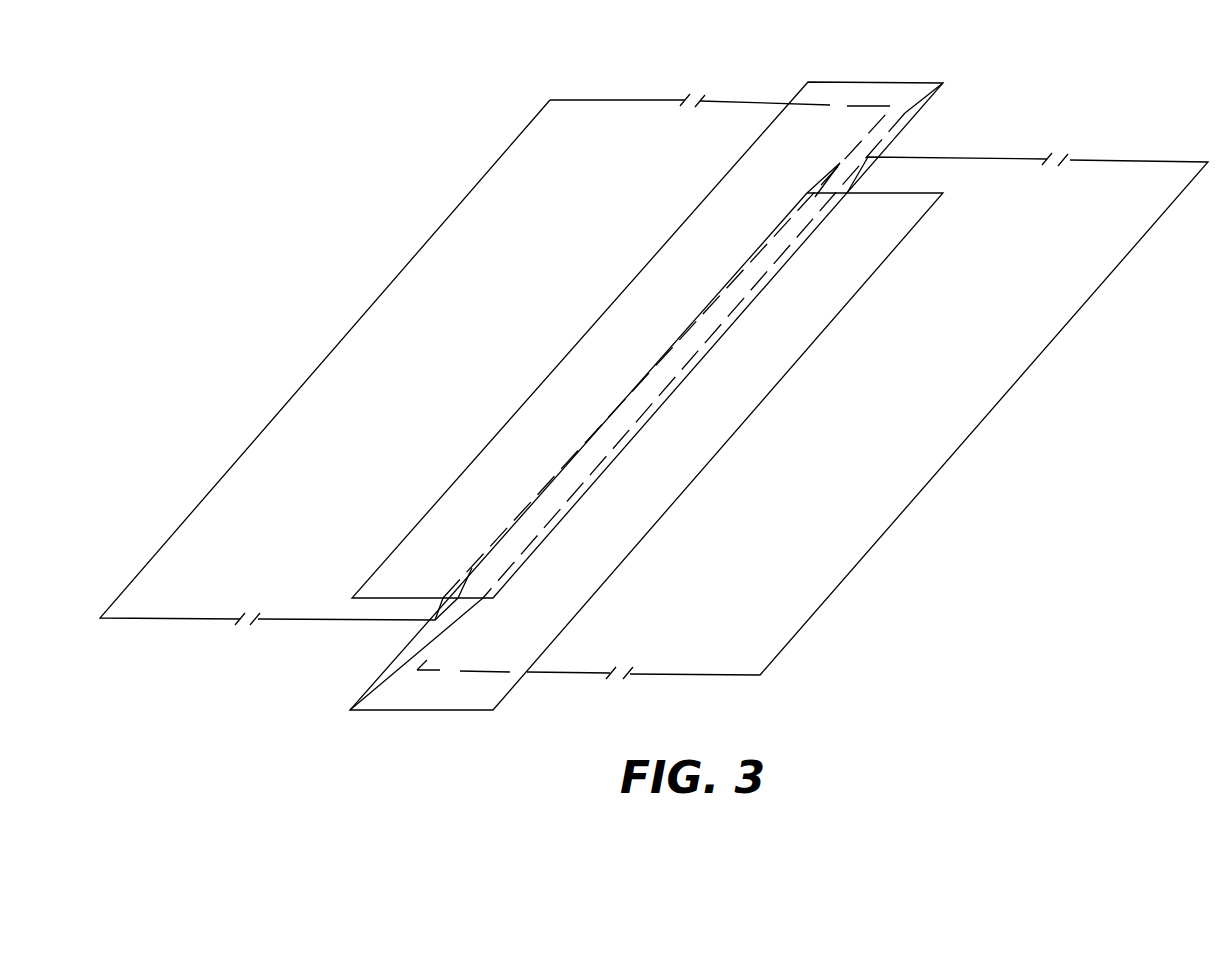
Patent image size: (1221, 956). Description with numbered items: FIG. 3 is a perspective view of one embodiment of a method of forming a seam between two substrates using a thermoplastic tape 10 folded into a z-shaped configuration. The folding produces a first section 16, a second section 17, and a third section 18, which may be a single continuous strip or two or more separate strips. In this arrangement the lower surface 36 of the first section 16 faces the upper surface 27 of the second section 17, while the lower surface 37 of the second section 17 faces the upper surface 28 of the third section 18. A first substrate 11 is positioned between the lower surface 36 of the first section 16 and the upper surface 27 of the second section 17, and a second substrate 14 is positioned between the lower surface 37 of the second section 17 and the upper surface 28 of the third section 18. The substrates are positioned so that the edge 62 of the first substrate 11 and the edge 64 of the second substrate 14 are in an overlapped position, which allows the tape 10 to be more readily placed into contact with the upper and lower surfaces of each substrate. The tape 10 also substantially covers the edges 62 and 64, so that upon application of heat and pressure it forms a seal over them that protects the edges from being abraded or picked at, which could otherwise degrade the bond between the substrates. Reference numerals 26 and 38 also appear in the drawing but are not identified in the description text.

The thermoplastic tape 10 is at (873, 70).
The first substrate 11 is at (597, 120).
The second substrate 14 is at (877, 487).
The first section 16 is at (627, 310).
The second section 17 is at (409, 650).
The third section 18 is at (457, 701).
The strip edge 26 is at (437, 488).
The upper surface of the second section 27 is at (422, 635).
The upper surface of the third section 28 is at (784, 378).
The lower surface of the first section 36 is at (352, 599).
The lower surface of the second section 37 is at (445, 628).
The corner 38 is at (350, 711).
The edge of the first substrate 62 is at (458, 612).
The edge of the second substrate 64 is at (400, 655).